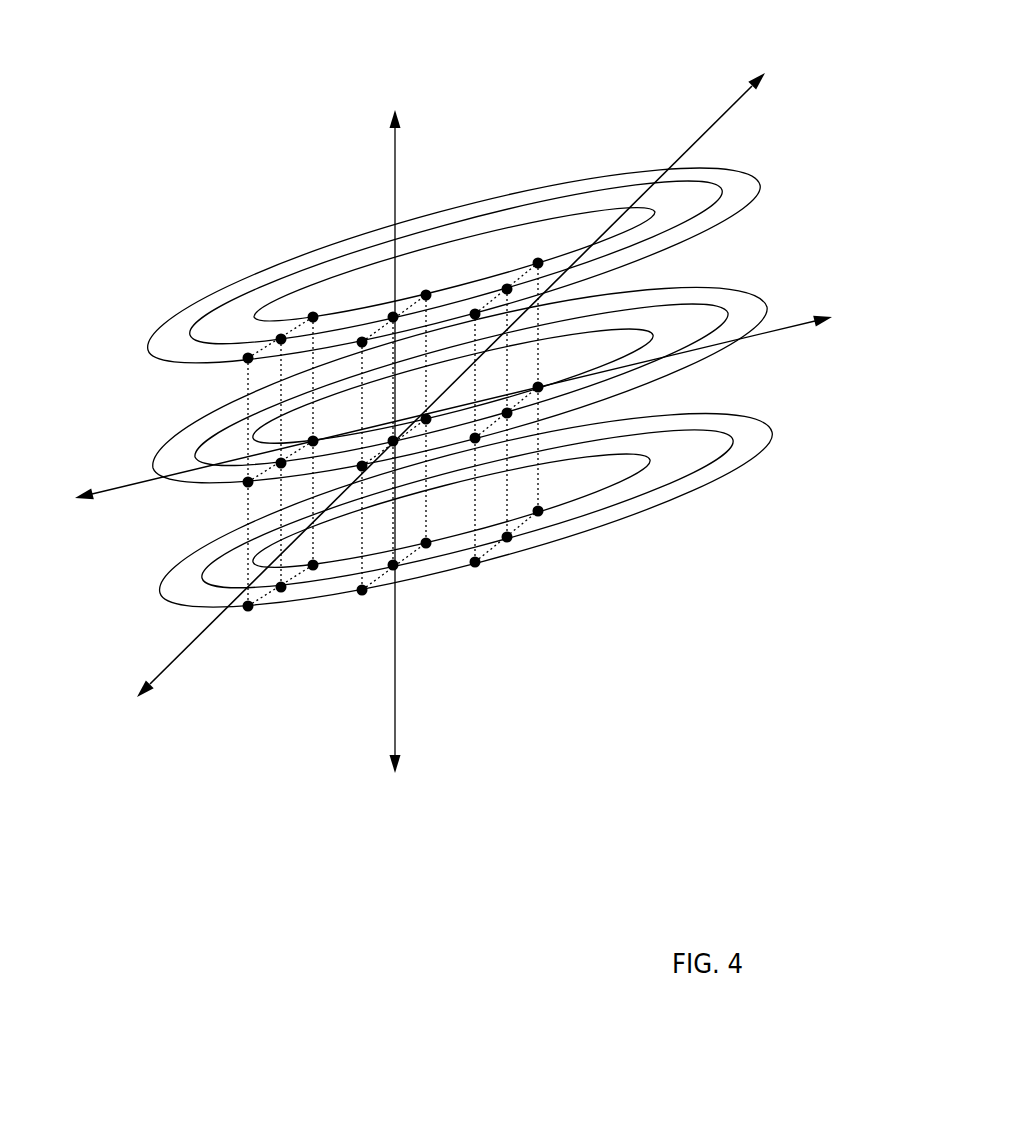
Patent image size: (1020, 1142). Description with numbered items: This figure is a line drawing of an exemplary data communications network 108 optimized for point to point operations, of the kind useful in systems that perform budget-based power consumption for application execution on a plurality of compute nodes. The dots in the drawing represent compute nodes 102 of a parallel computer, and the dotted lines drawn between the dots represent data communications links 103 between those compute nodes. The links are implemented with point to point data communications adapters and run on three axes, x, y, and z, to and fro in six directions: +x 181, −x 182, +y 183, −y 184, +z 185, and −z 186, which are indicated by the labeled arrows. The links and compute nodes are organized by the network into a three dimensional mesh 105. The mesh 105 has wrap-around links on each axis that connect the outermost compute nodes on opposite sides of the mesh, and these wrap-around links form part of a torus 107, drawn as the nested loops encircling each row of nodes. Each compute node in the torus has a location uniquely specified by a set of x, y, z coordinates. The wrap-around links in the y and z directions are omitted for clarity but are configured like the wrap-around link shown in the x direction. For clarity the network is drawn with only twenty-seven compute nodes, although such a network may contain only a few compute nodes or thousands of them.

The compute nodes 102 is at (475, 565).
The data communications links 103 is at (248, 388).
The three dimensional mesh 105 is at (313, 315).
The torus 107 is at (226, 261).
The data communications network 108 is at (352, 994).
The +x direction 181 is at (865, 348).
The −x direction 182 is at (73, 538).
The +y direction 183 is at (807, 98).
The −y direction 184 is at (134, 745).
The +z direction 185 is at (409, 100).
The −z direction 186 is at (411, 835).